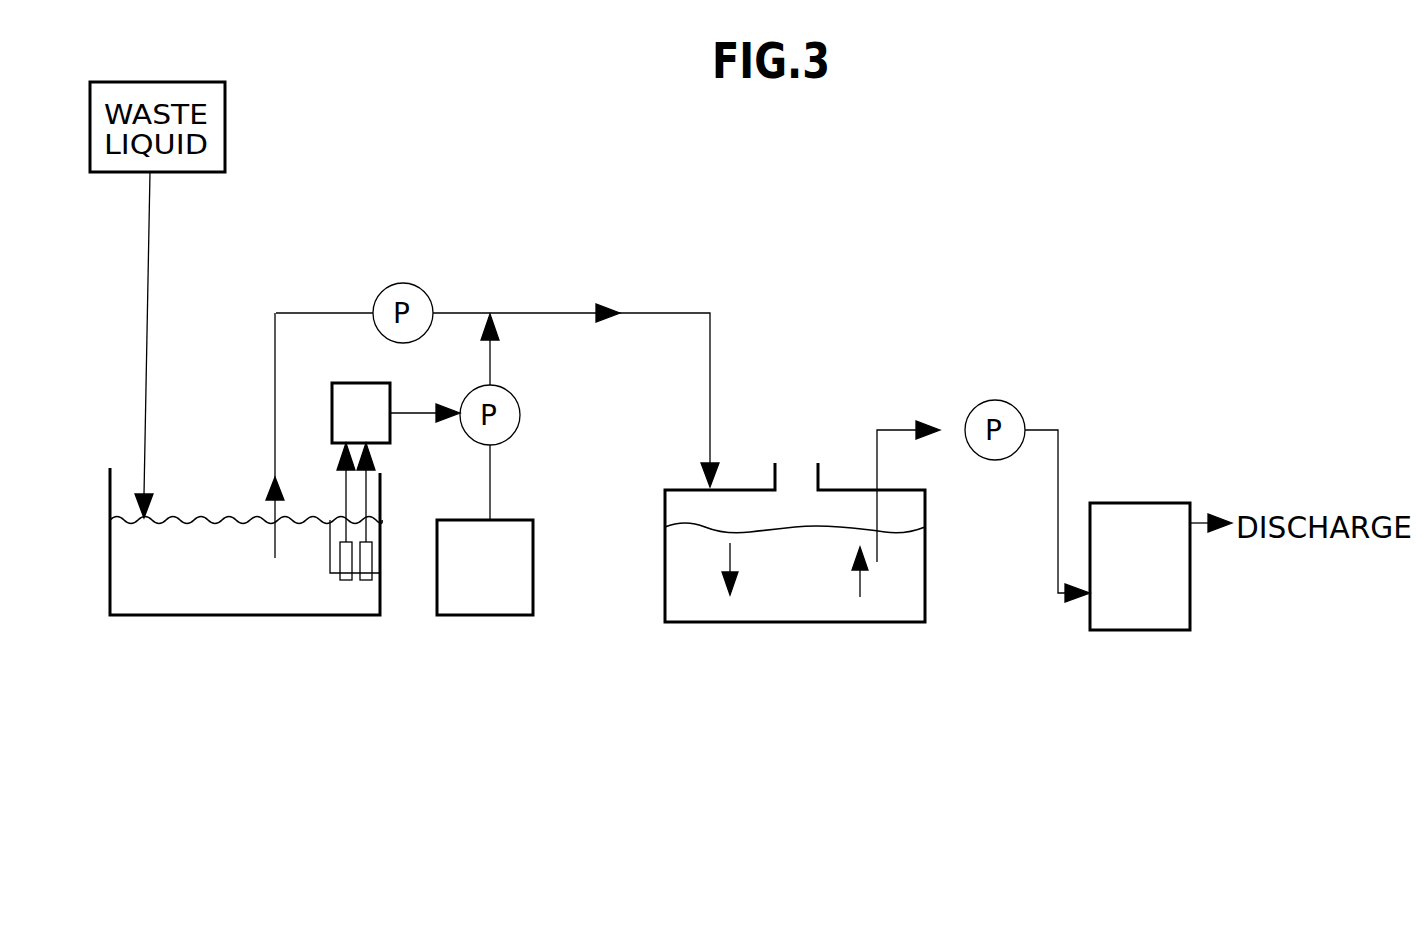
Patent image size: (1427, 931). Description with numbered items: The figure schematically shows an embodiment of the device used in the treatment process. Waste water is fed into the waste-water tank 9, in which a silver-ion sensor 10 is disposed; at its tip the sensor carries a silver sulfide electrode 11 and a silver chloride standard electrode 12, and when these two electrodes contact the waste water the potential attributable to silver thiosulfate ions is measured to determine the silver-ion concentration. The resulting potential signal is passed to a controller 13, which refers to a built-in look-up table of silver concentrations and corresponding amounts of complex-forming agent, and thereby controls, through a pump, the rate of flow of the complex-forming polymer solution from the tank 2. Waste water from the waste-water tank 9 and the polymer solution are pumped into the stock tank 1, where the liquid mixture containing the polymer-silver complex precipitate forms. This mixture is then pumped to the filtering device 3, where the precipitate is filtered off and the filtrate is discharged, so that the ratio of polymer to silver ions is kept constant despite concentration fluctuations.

The stock tank 1 is at (745, 625).
The tank 2 is at (508, 616).
The filtering device 3 is at (1115, 632).
The waste-water tank 9 is at (260, 615).
The silver-ion sensor 10 is at (378, 563).
The silver sulfide electrode 11 is at (345, 580).
The silver chloride standard electrode 12 is at (365, 580).
The controller 13 is at (332, 400).